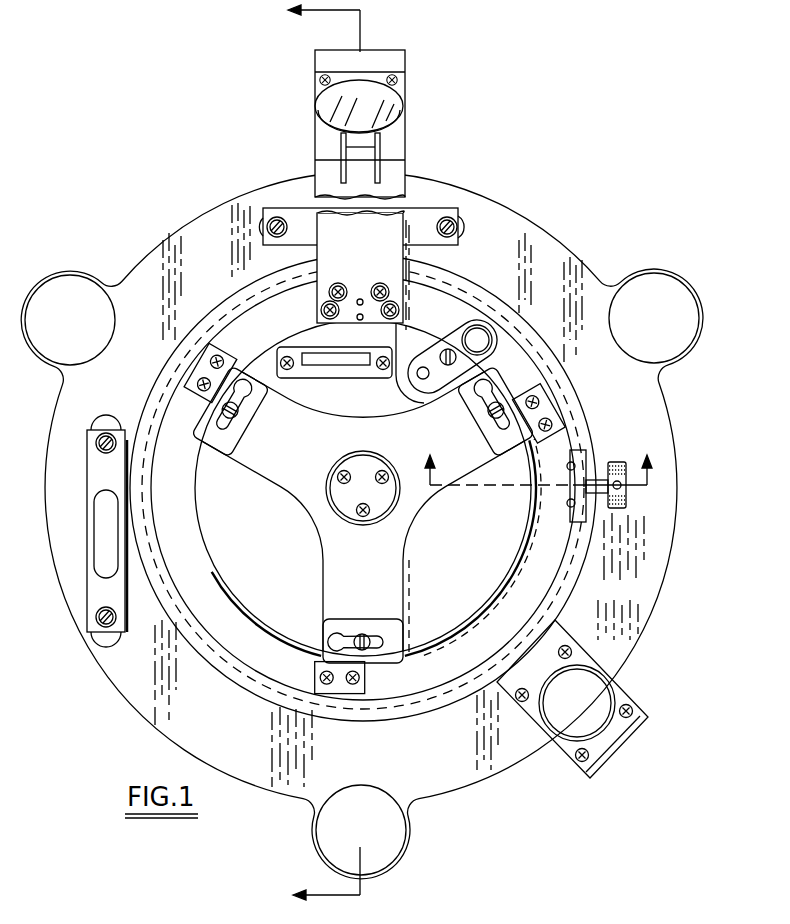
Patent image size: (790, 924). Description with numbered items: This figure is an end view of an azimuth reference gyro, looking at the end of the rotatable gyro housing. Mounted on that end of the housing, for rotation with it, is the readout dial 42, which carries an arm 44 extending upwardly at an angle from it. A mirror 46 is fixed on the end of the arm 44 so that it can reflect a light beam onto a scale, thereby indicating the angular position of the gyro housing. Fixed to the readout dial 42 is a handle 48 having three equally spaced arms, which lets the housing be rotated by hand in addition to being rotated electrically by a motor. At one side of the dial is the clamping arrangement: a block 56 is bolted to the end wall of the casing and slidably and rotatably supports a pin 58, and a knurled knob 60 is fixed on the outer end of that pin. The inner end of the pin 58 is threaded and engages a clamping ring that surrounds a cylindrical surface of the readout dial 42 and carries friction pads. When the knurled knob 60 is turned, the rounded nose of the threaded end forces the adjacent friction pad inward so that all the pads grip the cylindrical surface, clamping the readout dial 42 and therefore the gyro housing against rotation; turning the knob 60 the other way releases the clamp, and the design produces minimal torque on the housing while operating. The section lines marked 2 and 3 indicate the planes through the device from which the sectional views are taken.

The section line 2- 2 is at (319, 457).
The section line 3- 3 is at (539, 458).
The readout dial 42 is at (480, 632).
The arm 44 is at (361, 186).
The mirror 46 is at (406, 108).
The handle 48 is at (420, 498).
The block 56 is at (572, 493).
The pin 58 is at (596, 480).
The knurled knob 60 is at (627, 497).